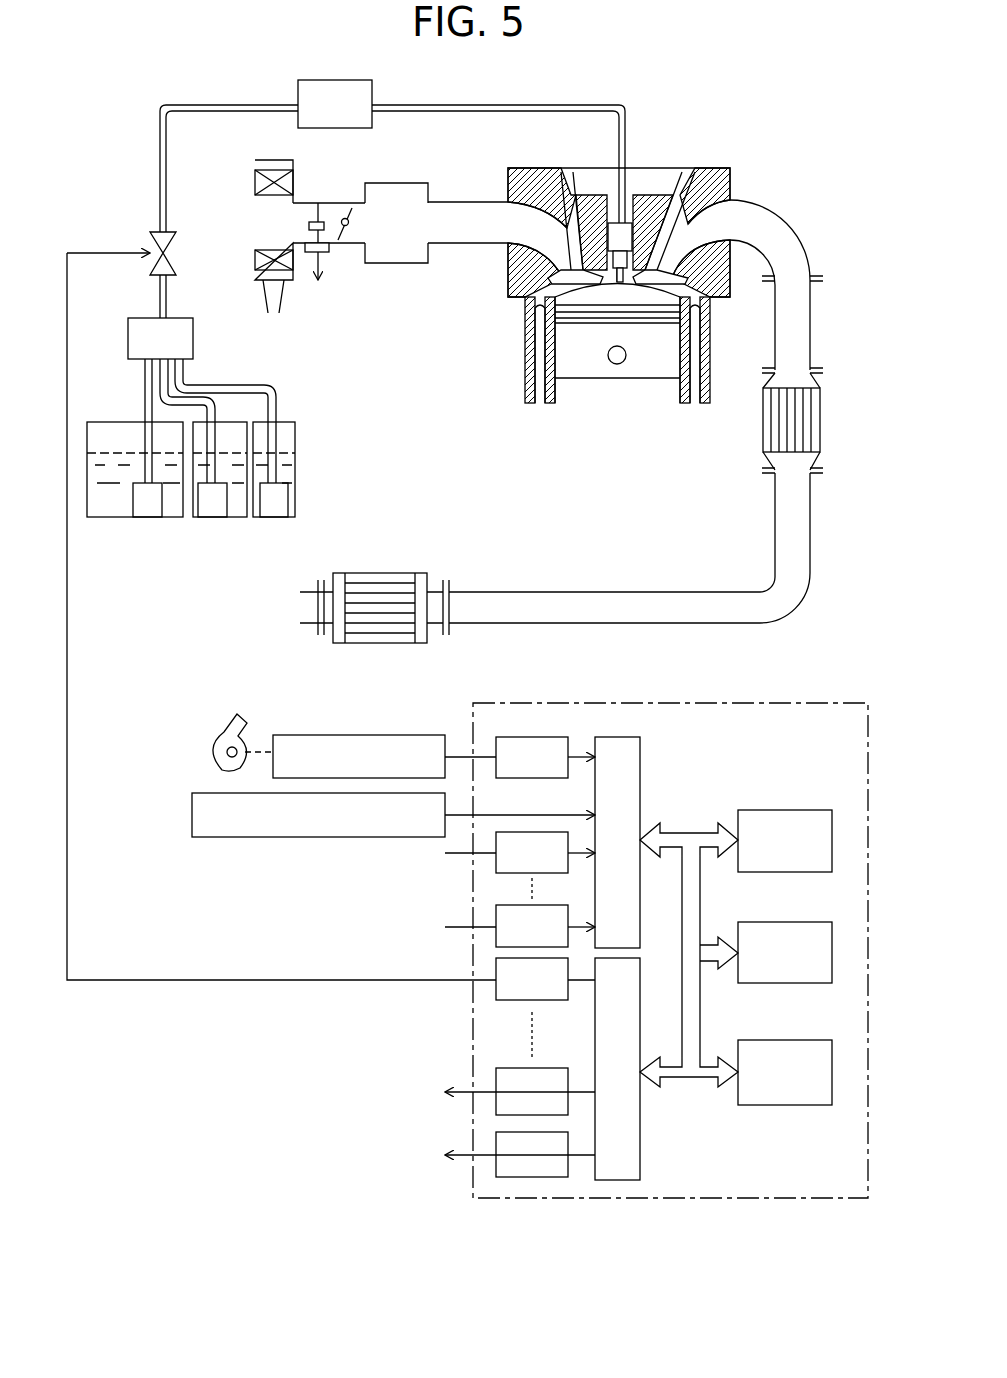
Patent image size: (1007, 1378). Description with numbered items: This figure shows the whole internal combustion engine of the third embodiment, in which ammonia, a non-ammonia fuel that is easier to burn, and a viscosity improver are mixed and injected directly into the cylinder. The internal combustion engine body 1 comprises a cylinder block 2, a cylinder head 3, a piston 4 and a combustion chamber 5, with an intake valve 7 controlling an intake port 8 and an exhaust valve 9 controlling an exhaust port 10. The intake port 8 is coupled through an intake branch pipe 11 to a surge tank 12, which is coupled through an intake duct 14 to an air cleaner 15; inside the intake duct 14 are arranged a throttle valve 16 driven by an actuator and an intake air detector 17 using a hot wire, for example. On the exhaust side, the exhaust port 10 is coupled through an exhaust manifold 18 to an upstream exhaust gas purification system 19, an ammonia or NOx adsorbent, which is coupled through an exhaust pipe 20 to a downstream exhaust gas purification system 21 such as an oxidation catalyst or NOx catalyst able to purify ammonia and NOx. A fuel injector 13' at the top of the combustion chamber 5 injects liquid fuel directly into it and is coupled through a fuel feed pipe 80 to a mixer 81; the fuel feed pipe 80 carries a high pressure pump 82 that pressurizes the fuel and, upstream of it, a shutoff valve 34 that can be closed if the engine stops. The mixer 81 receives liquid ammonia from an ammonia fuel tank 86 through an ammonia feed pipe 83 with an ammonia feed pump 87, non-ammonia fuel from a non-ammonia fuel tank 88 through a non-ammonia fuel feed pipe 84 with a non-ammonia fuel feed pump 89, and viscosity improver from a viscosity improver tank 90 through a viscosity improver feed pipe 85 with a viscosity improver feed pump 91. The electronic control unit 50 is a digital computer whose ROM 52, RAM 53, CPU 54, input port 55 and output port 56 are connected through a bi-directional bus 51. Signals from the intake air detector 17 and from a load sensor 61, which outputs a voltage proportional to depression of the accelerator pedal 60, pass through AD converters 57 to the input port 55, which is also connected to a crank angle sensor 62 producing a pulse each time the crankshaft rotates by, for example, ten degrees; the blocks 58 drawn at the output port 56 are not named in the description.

The internal combustion engine body 1 is at (745, 160).
The cylinder block 2 is at (712, 350).
The cylinder head 3 is at (733, 185).
The piston 4 is at (585, 368).
The combustion chamber 5 is at (650, 292).
The intake valve 7 is at (570, 190).
The intake port 8 is at (520, 195).
The exhaust valve 9 is at (690, 168).
The exhaust port 10 is at (710, 200).
The intake branch pipe 11 is at (447, 243).
The surge tank 12 is at (400, 263).
The fuel injector 13' is at (639, 209).
The intake duct 14 is at (345, 243).
The air cleaner 15 is at (255, 258).
The throttle valve 16 is at (350, 208).
The intake air detector 17 is at (318, 215).
The exhaust manifold 18 is at (800, 220).
The upstream exhaust gas purification system 19 is at (820, 420).
The exhaust pipe 20 is at (810, 540).
The downstream exhaust gas purification system 21 is at (392, 630).
The shutoff valve 34 is at (158, 232).
The electronic control unit 50 is at (805, 700).
The bi-directional bus 51 is at (690, 833).
The ROM 52 is at (795, 810).
The RAM 53 is at (800, 922).
The CPU 54 is at (795, 1040).
The input port 55 is at (640, 750).
The output port 56 is at (640, 1165).
The AD converter 57 is at (530, 737).
The drive circuit 58 is at (496, 1075).
The accelerator pedal 60 is at (215, 740).
The load sensor 61 is at (312, 735).
The crank angle sensor 62 is at (210, 837).
The fuel feed pipe 80 is at (440, 105).
The mixer 81 is at (193, 338).
The high pressure pump 82 is at (345, 80).
The ammonia feed pipe 83 is at (145, 387).
The non-ammonia fuel feed pipe 84 is at (218, 397).
The viscosity improver feed pipe 85 is at (278, 410).
The ammonia fuel tank 86 is at (105, 517).
The ammonia feed pump 87 is at (152, 517).
The non-ammonia fuel tank 88 is at (240, 517).
The non-ammonia fuel feed pump 89 is at (215, 517).
The viscosity improver tank 90 is at (295, 510).
The viscosity improver feed pump 91 is at (278, 517).